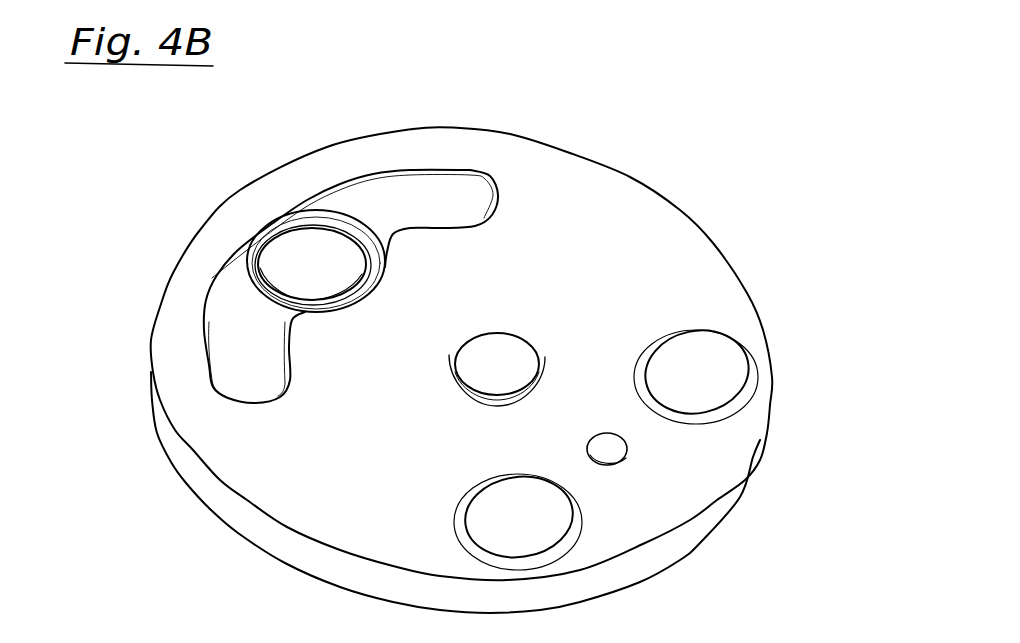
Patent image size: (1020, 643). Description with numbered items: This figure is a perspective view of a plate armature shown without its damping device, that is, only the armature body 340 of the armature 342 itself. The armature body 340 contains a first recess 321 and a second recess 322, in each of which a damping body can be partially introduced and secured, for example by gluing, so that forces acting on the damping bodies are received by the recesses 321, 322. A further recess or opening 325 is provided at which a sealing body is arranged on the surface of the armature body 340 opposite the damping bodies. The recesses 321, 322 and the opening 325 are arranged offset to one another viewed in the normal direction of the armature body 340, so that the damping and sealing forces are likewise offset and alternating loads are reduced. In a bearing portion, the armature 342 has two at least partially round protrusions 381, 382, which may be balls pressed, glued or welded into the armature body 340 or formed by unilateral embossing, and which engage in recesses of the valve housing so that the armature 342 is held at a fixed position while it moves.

The first recess 321 is at (233, 351).
The second recess 322 is at (444, 190).
The recess or opening 325 is at (317, 256).
The armature body 340 is at (628, 255).
The armature 342 is at (740, 495).
The protrusion 381 is at (523, 545).
The protrusion 382 is at (730, 376).